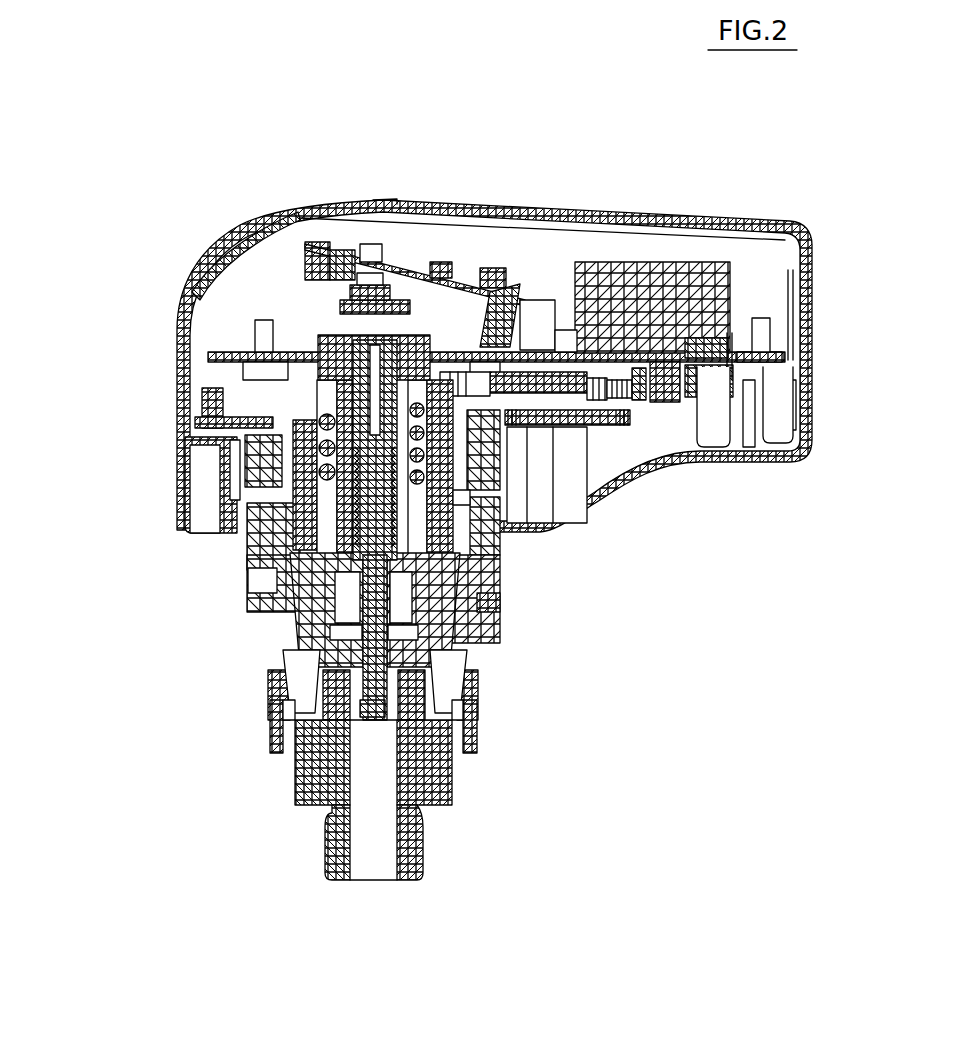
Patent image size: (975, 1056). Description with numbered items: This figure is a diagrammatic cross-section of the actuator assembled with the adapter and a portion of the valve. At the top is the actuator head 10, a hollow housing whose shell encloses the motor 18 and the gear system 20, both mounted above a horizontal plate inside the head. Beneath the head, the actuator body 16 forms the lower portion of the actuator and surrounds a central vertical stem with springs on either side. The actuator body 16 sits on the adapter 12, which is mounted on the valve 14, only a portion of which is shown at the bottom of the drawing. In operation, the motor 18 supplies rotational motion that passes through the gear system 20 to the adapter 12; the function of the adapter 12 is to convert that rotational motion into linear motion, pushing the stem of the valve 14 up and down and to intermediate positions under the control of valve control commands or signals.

The actuator head 10 is at (387, 199).
The adapter 12 is at (494, 630).
The valve 14 is at (462, 792).
The actuator body 16 is at (183, 531).
The motor 18 is at (648, 259).
The gear system 20 is at (612, 434).